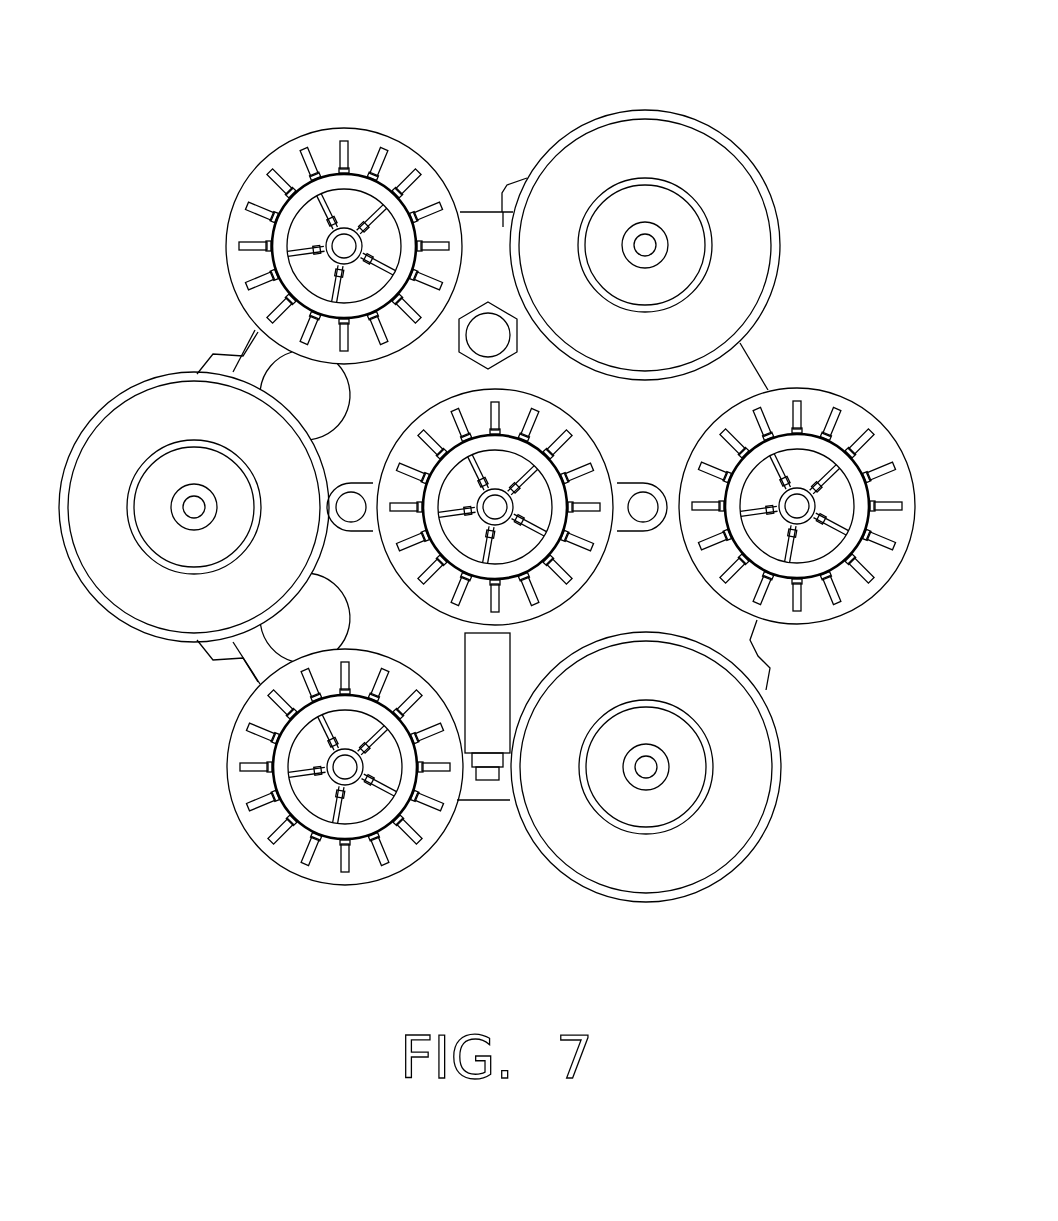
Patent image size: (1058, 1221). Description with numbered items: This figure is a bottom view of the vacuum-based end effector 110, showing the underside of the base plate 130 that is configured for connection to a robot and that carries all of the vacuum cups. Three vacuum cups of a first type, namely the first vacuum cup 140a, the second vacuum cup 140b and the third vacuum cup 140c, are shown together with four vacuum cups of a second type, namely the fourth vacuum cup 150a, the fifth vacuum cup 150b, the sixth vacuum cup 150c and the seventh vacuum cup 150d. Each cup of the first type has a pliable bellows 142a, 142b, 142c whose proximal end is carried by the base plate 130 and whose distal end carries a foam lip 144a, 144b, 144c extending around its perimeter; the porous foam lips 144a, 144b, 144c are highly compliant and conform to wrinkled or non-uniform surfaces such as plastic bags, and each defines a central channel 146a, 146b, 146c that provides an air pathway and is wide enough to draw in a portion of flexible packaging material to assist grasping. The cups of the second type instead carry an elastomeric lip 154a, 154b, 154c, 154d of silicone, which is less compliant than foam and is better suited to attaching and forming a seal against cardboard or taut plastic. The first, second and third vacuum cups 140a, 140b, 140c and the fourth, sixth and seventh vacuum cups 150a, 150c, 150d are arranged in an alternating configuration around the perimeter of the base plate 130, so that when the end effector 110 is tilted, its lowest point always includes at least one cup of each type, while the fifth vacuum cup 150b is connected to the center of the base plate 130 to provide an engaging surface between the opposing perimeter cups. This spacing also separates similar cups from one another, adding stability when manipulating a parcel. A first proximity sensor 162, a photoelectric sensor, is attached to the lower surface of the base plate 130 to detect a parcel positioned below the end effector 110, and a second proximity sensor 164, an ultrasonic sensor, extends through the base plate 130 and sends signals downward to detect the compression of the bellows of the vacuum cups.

The end effector 110 is at (122, 165).
The base plate 130 is at (503, 227).
The first vacuum cup 140a is at (708, 204).
The second vacuum cup 140b is at (185, 498).
The third vacuum cup 140c is at (709, 803).
The bellows 142a is at (665, 200).
The bellows 142b is at (175, 545).
The bellows 142c is at (692, 771).
The foam lip 144a is at (740, 185).
The foam lip 144b is at (175, 610).
The foam lip 144c is at (750, 822).
The central channel 146a is at (708, 242).
The central channel 146b is at (194, 440).
The central channel 146c is at (648, 828).
The fourth vacuum cup 150a is at (344, 215).
The fifth vacuum cup 150b is at (627, 430).
The sixth vacuum cup 150c is at (821, 495).
The seventh vacuum cup 150d is at (345, 811).
The elastomeric lip 154a is at (360, 137).
The elastomeric lip 154b is at (580, 452).
The elastomeric lip 154c is at (880, 557).
The elastomeric lip 154d is at (400, 858).
The first proximity sensor 162 is at (485, 730).
The second proximity sensor 164 is at (483, 325).